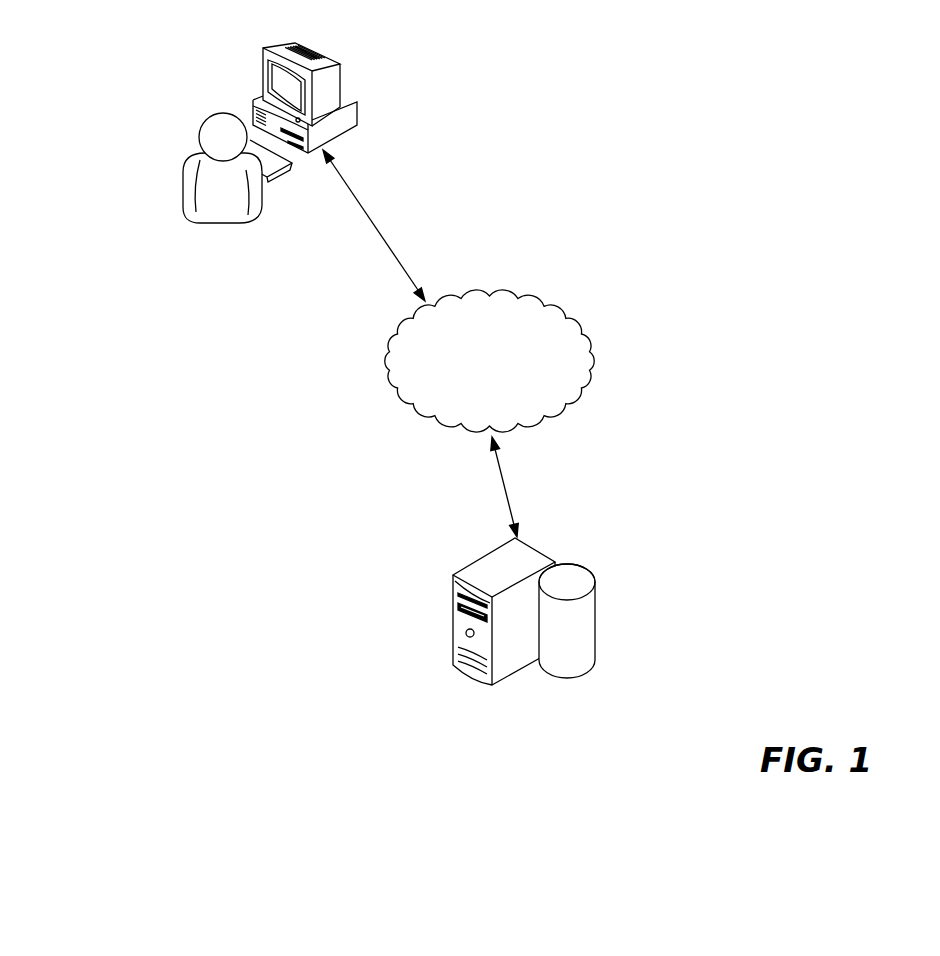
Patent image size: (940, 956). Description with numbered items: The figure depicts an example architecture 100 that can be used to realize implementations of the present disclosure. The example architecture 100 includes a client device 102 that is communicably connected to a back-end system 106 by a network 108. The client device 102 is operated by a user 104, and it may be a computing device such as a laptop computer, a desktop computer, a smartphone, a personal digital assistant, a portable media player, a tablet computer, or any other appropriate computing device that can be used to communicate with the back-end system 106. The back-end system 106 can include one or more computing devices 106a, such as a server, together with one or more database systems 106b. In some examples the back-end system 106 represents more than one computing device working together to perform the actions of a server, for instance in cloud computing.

The example architecture 100 is at (717, 140).
The client device 102 is at (267, 68).
The user 104 is at (198, 132).
The back-end system 106 is at (605, 530).
The computing device 106a is at (453, 612).
The database system 106b is at (595, 617).
The network 108 is at (485, 292).